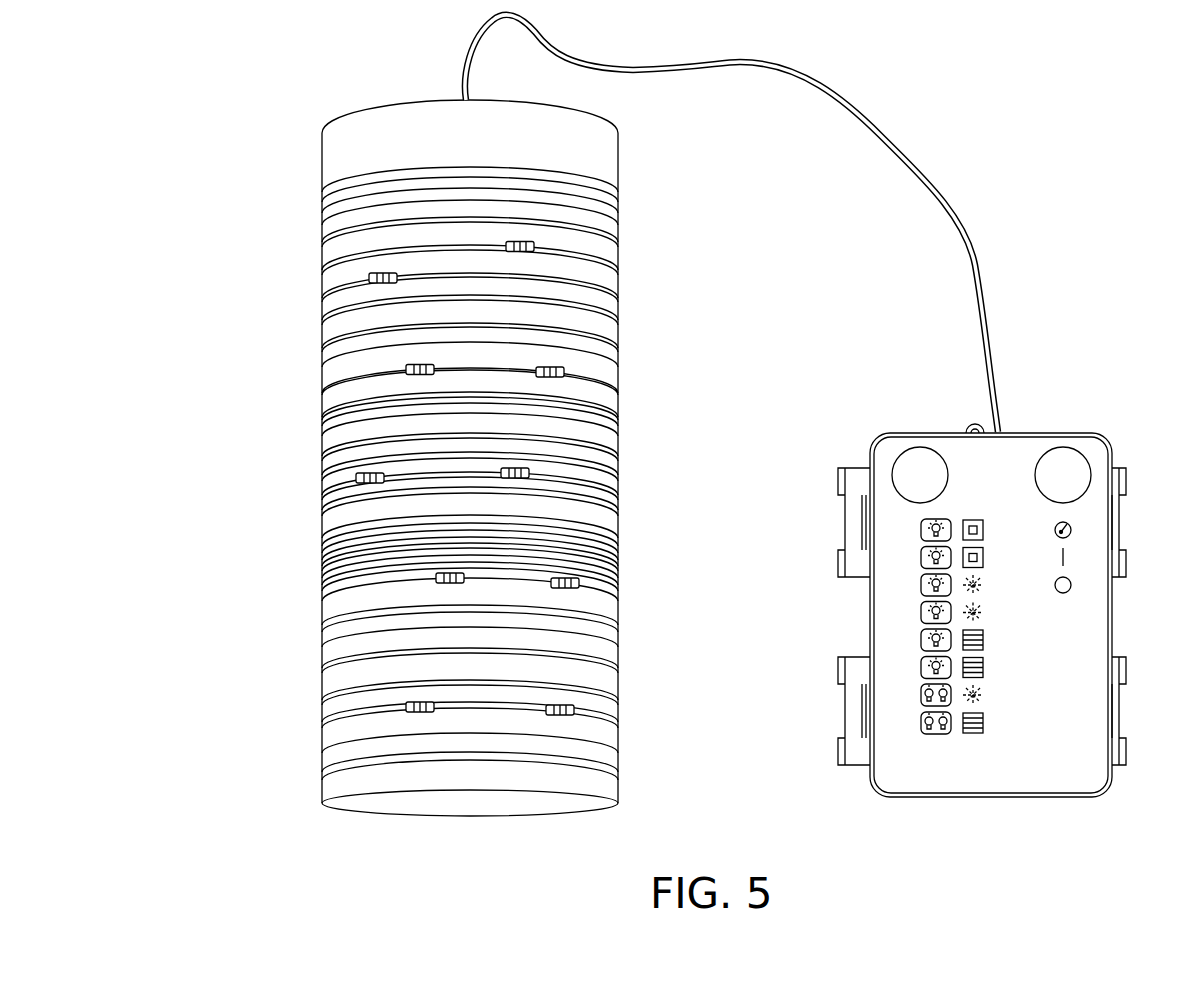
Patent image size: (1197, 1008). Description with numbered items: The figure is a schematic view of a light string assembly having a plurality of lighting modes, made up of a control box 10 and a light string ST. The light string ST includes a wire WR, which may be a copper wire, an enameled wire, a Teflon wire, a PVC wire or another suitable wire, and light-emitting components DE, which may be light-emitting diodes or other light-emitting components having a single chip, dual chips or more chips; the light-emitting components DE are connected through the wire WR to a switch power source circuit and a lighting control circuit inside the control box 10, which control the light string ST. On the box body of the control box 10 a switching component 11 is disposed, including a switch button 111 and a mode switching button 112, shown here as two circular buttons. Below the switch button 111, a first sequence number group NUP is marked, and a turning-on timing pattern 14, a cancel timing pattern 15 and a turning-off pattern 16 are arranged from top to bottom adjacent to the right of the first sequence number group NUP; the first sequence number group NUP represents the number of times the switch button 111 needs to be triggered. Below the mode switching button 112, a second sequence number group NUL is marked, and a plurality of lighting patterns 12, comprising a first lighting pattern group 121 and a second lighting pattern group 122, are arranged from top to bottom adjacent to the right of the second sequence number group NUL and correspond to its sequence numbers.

The control box 10 is at (1098, 493).
The switching component 11 is at (965, 365).
The switch button 111 is at (1050, 474).
The mode switching button 112 is at (918, 458).
The lighting patterns 12 is at (1022, 843).
The first lighting pattern group 121 is at (938, 733).
The second lighting pattern group 122 is at (972, 733).
The turning-on timing pattern 14 is at (1072, 530).
The cancel timing pattern 15 is at (1064, 558).
The turning-off pattern 16 is at (1072, 583).
The light string ST is at (241, 215).
The wire WR is at (340, 259).
The light-emitting components DE is at (372, 283).
The second sequence number group NUL is at (893, 722).
The first sequence number group NUP is at (1037, 600).